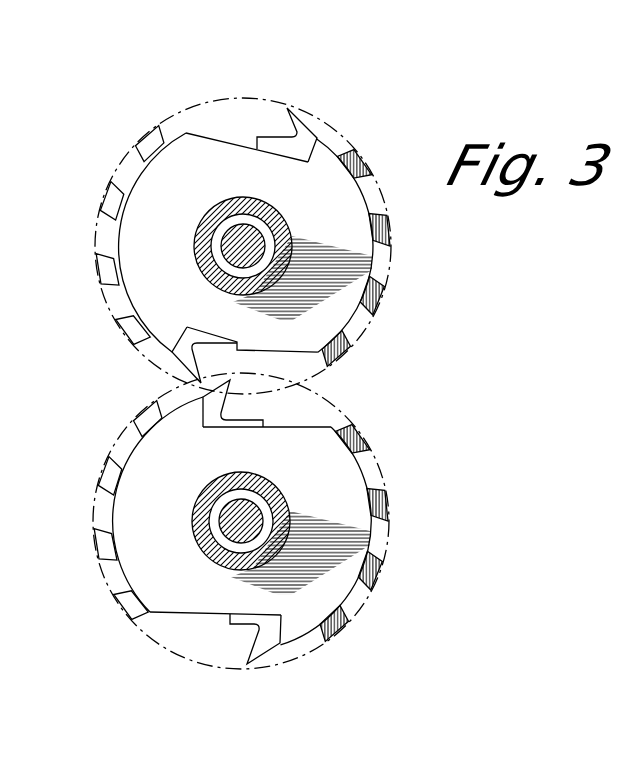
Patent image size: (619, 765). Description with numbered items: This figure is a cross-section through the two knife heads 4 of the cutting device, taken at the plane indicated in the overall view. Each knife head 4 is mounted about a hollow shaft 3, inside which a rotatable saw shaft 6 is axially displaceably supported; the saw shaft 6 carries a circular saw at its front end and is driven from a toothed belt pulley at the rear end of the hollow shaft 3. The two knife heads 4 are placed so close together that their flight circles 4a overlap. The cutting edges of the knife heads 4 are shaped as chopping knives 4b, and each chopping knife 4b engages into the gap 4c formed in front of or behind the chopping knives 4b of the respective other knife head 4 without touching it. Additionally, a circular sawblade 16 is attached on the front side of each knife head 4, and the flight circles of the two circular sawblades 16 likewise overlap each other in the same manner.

The hollow shaft 3 is at (265, 250).
The knife head 4 is at (325, 183).
The flight circle 4a is at (241, 118).
The chopping knife 4b is at (298, 115).
The flat cut surface of roller 4c is at (212, 118).
The saw shaft 6 is at (260, 243).
The circular sawblade 16 is at (153, 137).